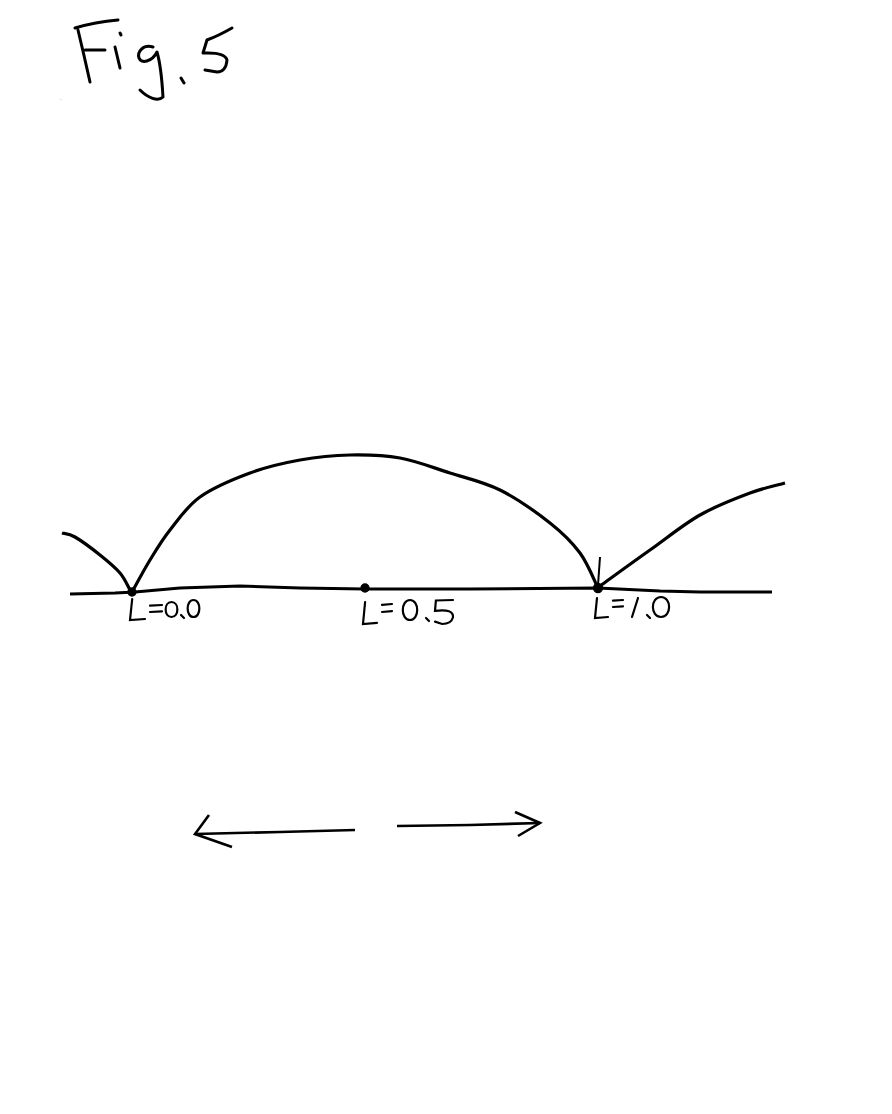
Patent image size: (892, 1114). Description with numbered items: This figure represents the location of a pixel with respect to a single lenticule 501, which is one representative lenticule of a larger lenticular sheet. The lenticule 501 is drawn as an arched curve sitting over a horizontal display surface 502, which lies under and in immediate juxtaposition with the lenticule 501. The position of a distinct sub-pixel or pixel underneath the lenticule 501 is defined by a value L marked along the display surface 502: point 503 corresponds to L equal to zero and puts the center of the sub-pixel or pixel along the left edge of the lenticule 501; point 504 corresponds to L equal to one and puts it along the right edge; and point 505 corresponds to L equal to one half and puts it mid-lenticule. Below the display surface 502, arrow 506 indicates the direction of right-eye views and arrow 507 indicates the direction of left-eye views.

The lenticule 501 is at (360, 436).
The display surface 502 is at (716, 606).
The point 503 is at (125, 600).
The point 504 is at (580, 608).
The point 505 is at (358, 610).
The arrow 506 is at (292, 850).
The arrow 507 is at (467, 845).